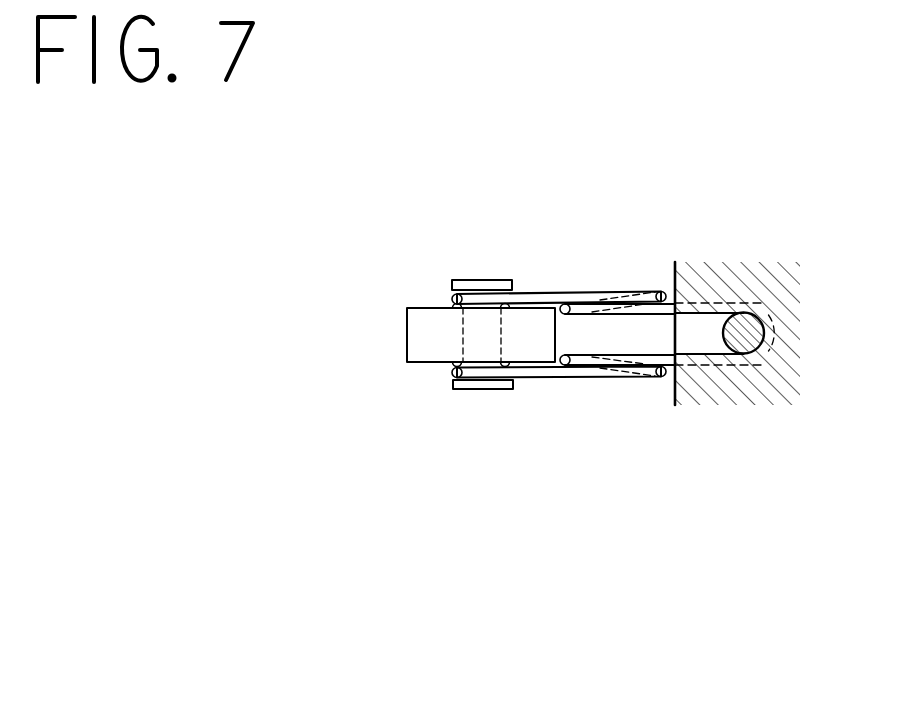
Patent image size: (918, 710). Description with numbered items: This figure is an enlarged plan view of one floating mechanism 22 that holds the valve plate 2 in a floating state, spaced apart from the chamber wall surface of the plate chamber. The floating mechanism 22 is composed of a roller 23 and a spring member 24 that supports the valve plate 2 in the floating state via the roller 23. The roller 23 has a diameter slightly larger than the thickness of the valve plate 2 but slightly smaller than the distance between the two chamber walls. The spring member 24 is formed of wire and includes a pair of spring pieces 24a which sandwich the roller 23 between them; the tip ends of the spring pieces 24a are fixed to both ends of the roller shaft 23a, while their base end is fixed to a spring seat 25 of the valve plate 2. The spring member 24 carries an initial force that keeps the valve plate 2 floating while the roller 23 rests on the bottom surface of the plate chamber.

The valve plate 2 is at (736, 286).
The floating mechanism 22 is at (480, 263).
The roller 23 is at (413, 332).
The roller shaft 23a is at (485, 393).
The spring member 24 is at (597, 278).
The spring pieces 24a is at (553, 291).
The spring seat 25 is at (748, 332).